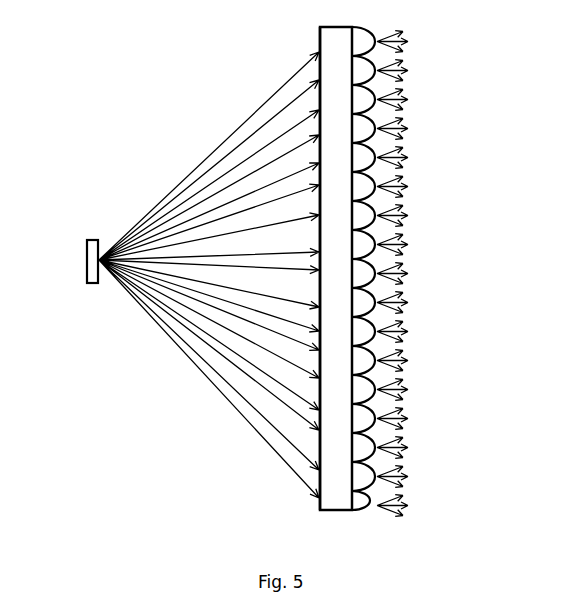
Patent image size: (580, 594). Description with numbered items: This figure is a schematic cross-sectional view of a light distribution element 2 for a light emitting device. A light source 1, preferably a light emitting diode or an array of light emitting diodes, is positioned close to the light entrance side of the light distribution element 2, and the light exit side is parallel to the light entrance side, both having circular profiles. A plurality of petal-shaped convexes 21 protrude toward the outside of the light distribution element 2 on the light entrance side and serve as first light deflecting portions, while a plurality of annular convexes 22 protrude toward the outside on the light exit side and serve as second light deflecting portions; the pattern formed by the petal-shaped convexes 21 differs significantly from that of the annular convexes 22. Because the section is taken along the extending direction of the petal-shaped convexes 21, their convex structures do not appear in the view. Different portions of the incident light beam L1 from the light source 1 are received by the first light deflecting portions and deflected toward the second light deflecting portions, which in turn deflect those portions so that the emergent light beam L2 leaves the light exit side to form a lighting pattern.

The light source 1 is at (95, 240).
The light distribution element 2 is at (338, 338).
The petal-shaped convex 21 is at (318, 148).
The annular convex 22 is at (400, 377).
The incident light beam L1 is at (233, 267).
The emergent light beam L2 is at (400, 195).